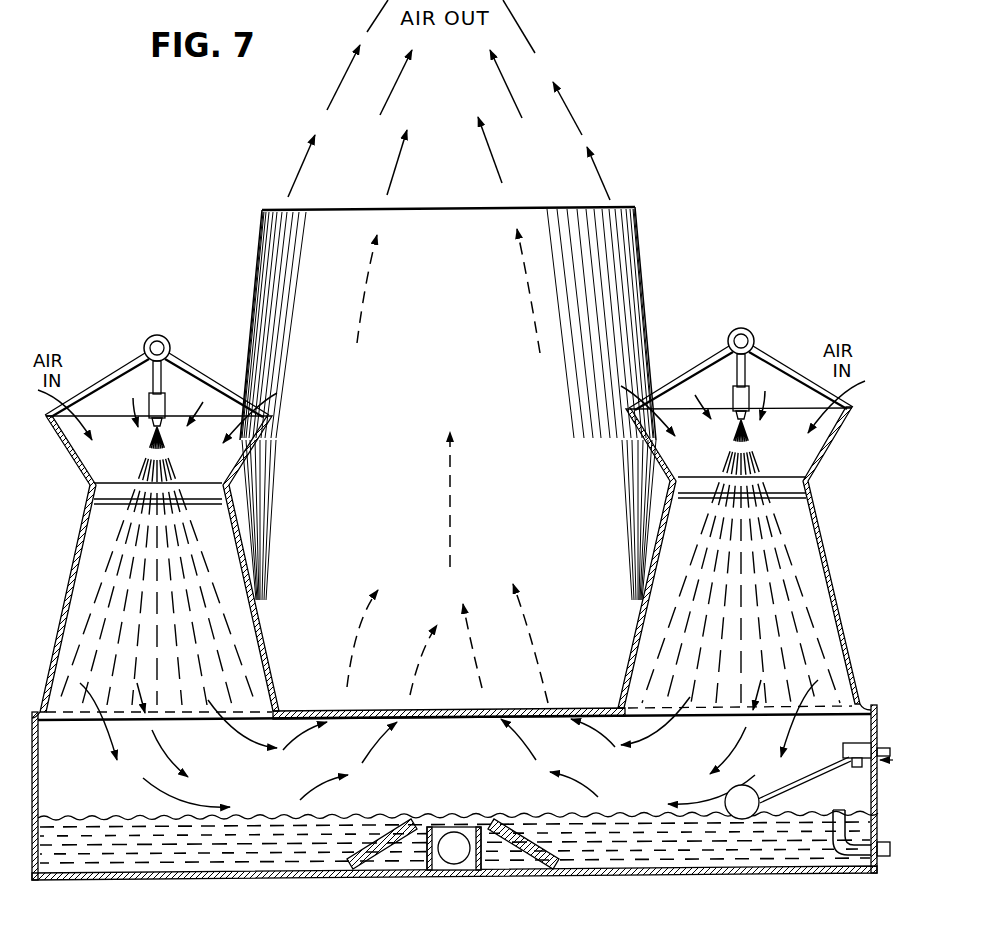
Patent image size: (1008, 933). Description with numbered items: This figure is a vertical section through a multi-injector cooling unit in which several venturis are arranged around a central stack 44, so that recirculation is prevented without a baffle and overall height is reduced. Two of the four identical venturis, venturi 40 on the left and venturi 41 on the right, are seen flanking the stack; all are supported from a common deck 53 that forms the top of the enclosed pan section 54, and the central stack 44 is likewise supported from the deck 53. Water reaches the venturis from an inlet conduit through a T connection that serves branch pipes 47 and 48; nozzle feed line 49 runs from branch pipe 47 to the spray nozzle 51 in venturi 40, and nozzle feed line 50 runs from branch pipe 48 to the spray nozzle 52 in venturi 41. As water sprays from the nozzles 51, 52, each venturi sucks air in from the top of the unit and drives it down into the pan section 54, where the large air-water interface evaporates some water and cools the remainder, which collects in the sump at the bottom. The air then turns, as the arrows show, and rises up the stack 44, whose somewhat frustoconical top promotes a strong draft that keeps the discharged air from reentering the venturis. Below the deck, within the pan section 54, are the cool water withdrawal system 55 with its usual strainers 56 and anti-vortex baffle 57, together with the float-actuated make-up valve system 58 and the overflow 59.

The venturi 40 is at (64, 590).
The venturi 41 is at (828, 552).
The central stack 44 is at (648, 250).
The branch pipe 47 is at (160, 335).
The branch pipe 48 is at (748, 326).
The nozzle feed line 49 is at (168, 372).
The nozzle feed line 50 is at (750, 364).
The spray nozzle 51 is at (149, 405).
The spray nozzle 52 is at (733, 398).
The common deck 53 is at (330, 711).
The enclosed pan section 54 is at (437, 760).
The cool water withdrawal system 55 is at (452, 862).
The strainers 56 is at (383, 851).
The anti-vortex baffle 57 is at (456, 826).
The float-actuated make-up valve system 58 is at (843, 752).
The overflow 59 is at (856, 850).